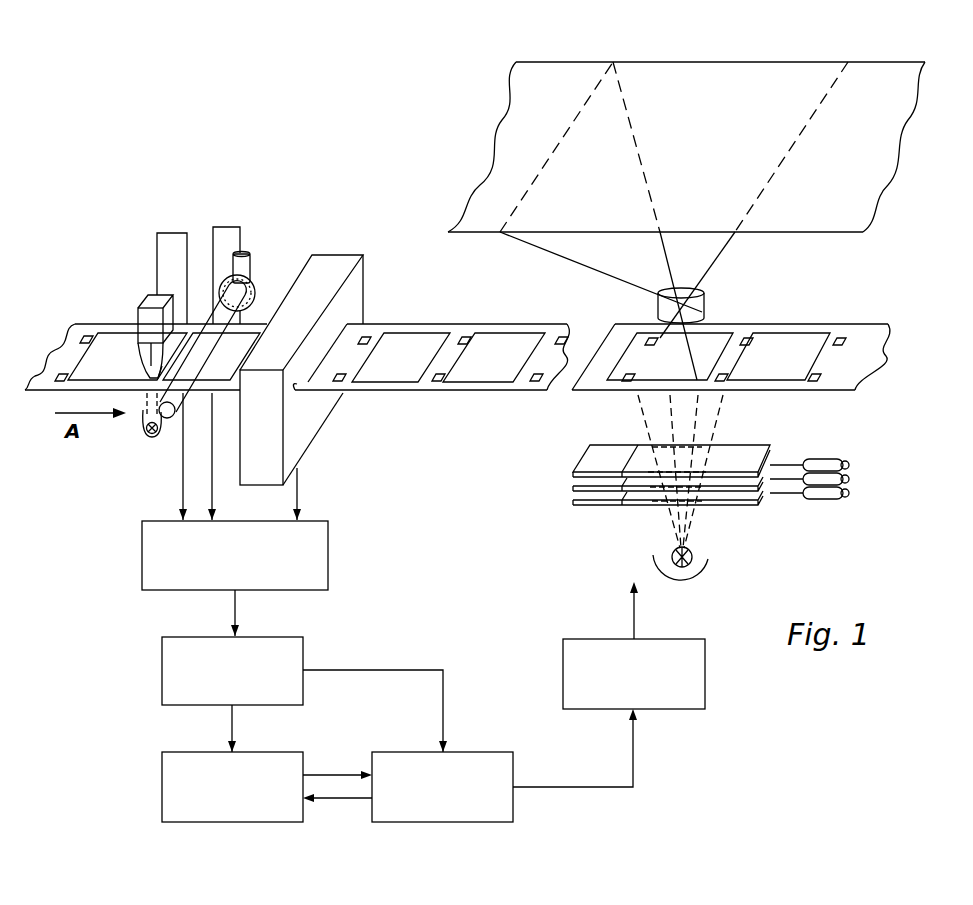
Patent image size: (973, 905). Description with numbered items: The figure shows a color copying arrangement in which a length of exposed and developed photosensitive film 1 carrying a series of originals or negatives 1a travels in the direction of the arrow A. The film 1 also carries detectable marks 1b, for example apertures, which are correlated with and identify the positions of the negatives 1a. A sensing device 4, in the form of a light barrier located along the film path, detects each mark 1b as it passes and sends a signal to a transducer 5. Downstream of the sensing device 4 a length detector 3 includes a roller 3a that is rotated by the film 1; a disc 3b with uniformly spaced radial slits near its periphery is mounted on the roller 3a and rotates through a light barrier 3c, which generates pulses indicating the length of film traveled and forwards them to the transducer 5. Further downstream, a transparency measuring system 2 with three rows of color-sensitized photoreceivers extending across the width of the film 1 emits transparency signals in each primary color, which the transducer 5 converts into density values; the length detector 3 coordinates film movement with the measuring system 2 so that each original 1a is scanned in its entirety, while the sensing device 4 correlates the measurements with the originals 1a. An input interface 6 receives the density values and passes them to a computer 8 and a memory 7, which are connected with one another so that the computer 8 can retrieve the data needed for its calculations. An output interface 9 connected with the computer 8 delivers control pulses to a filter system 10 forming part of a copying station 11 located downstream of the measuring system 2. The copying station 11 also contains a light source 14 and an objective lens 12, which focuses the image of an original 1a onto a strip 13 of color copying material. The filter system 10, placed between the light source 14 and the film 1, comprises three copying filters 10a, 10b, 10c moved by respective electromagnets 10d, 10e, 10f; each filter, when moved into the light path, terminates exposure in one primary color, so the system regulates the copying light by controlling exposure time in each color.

The film 1 is at (97, 322).
The negatives 1a is at (407, 337).
The detectable marks 1b is at (463, 337).
The transparency measuring system 2 is at (337, 258).
The length detector 3 is at (231, 311).
The roller 3a is at (204, 364).
The disc 3b is at (256, 294).
The light barrier 3c is at (249, 251).
The sensing device 4 is at (147, 300).
The transducer 5 is at (328, 549).
The input interface 6 is at (162, 656).
The memory 7 is at (162, 785).
The computer 8 is at (478, 752).
The output interface 9 is at (705, 668).
The filter system 10 is at (715, 483).
The copying filter 10a is at (588, 462).
The copying filter 10b is at (572, 483).
The copying filter 10c is at (573, 502).
The electromagnet 10d is at (849, 463).
The electromagnet 10e is at (850, 478).
The electromagnet 10f is at (850, 494).
The copying station 11 is at (686, 221).
The objective lens 12 is at (705, 301).
The strip of color copying material 13 is at (861, 230).
The light source 14 is at (710, 566).